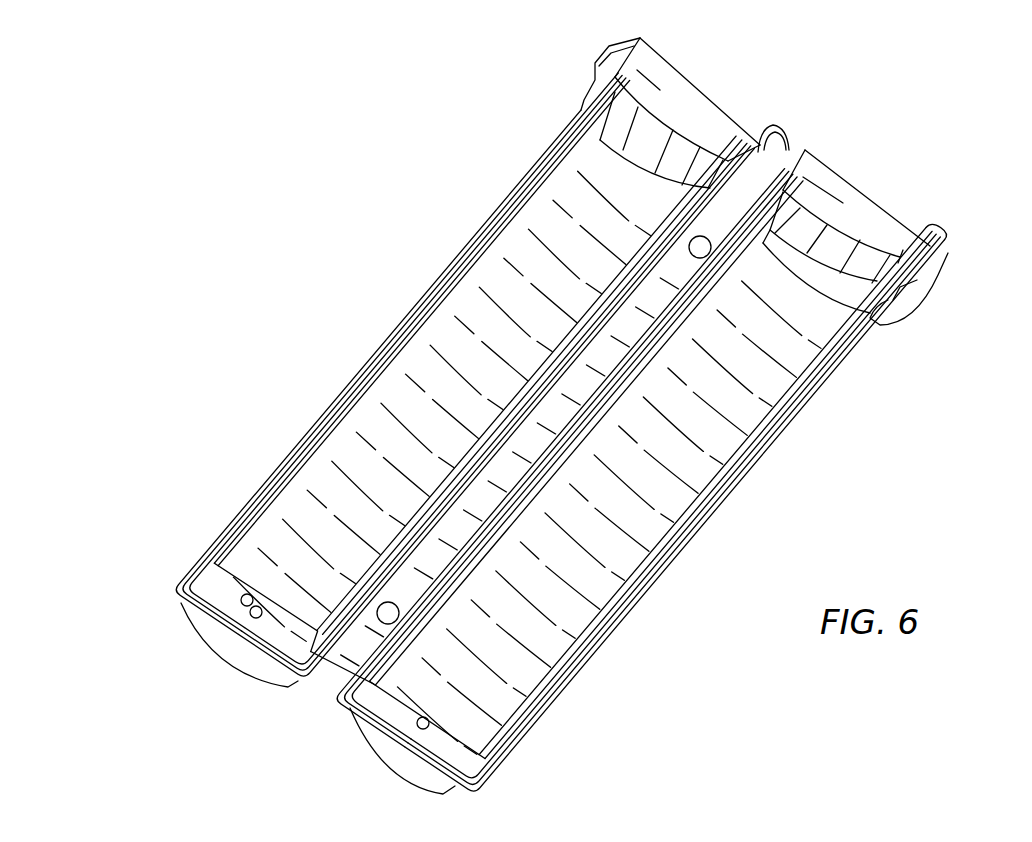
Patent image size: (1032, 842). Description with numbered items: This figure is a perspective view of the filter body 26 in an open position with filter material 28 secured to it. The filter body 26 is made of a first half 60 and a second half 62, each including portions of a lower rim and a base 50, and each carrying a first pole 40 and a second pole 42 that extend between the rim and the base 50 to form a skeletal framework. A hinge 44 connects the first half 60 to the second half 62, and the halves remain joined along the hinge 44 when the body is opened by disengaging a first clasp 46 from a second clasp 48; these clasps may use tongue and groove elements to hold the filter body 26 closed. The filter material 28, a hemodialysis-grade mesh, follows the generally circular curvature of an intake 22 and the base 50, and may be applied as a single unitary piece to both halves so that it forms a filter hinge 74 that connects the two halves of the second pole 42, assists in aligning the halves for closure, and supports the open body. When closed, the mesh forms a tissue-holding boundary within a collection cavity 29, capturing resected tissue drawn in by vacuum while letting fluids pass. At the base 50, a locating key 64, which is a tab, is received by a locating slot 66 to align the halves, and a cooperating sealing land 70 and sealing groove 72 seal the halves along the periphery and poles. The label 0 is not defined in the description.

The filter body 26 is at (391, 160).
The outer side wall 0 is at (497, 210).
The second pole 42 is at (612, 383).
The first pole 40 is at (742, 481).
The sealing groove 72 is at (754, 440).
The filter material 28 is at (322, 452).
The collection cavity 29 is at (464, 363).
The first clasp 46 is at (603, 62).
The hinge 44 is at (790, 144).
The intake 22 is at (785, 161).
The first half 60 is at (687, 92).
The second half 62 is at (880, 218).
The second clasp 48 is at (925, 286).
The sealing land 70 is at (180, 606).
The base 50 is at (212, 575).
The locating key 64 is at (242, 614).
The locating slot 66 is at (413, 724).
The filter hinge 74 is at (322, 672).